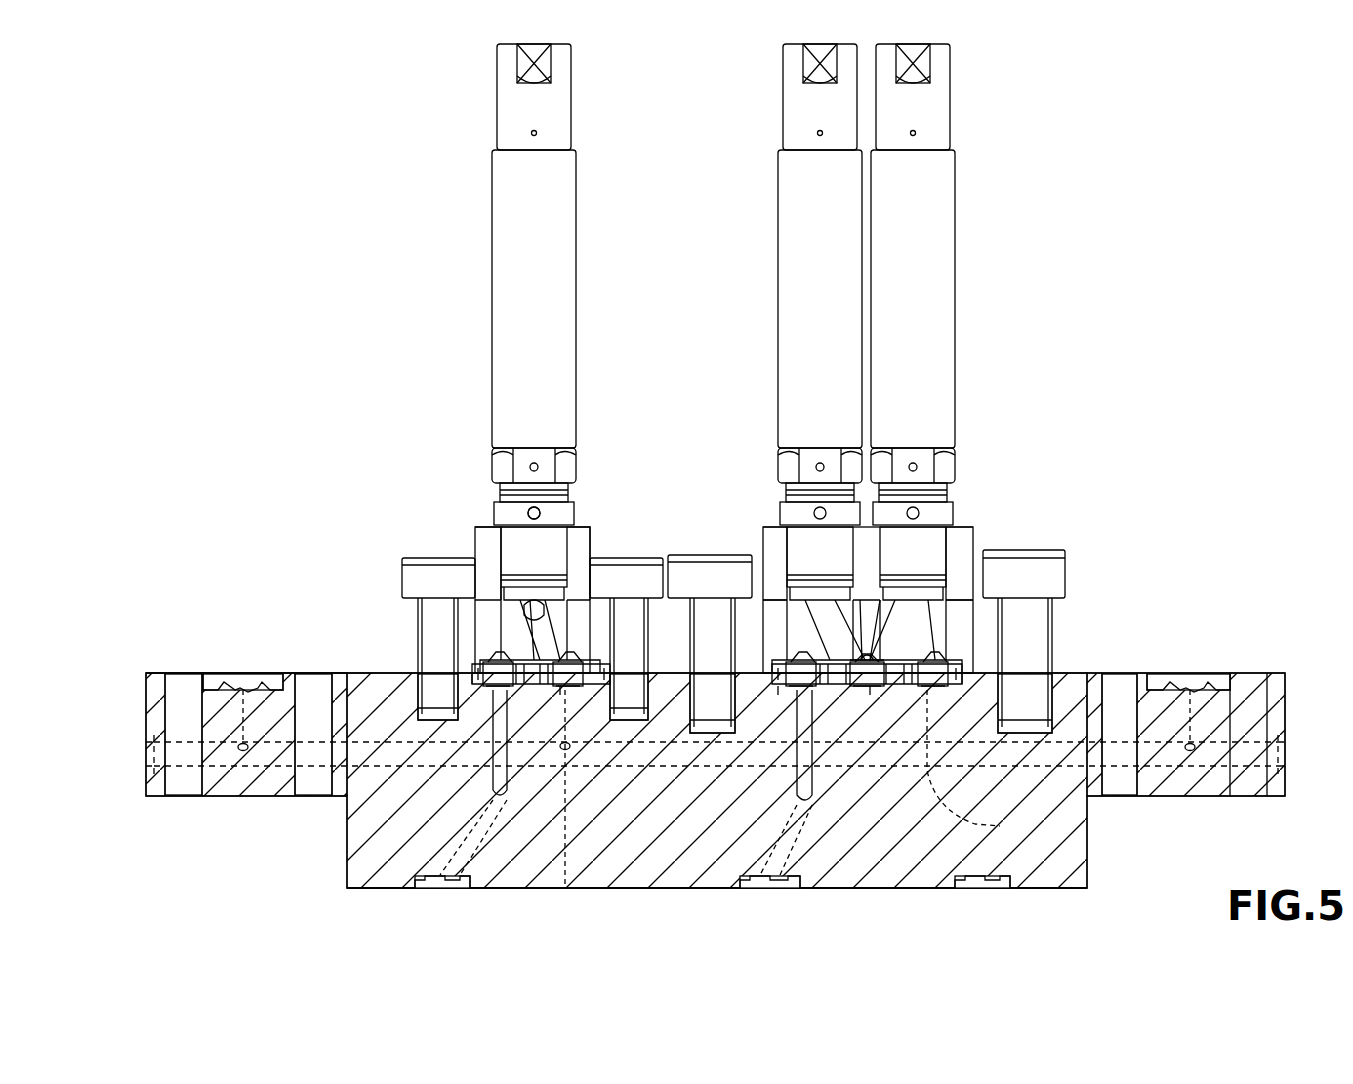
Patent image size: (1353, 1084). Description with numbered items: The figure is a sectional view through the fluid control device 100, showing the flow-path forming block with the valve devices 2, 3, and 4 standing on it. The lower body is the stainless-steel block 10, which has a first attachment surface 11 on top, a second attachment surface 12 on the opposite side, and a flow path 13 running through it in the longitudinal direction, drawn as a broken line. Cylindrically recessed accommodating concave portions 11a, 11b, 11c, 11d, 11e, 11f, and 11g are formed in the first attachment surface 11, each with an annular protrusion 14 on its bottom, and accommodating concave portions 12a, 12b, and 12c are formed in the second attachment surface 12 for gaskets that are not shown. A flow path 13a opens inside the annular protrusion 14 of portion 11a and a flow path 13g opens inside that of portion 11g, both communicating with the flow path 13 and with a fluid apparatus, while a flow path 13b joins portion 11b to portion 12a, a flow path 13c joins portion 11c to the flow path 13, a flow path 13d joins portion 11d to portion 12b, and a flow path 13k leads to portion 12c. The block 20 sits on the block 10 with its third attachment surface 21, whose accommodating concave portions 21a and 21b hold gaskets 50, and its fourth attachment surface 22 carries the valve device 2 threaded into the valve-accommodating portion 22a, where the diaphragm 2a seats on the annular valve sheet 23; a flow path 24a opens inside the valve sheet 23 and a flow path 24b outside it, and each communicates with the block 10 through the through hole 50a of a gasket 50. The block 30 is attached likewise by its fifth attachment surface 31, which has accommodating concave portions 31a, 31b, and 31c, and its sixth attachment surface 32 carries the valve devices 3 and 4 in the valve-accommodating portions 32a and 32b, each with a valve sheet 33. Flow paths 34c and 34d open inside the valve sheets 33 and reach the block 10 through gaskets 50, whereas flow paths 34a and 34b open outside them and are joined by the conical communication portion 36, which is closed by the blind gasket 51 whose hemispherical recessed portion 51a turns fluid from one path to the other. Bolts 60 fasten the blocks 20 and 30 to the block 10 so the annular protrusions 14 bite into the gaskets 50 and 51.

The fluid control device 100 is at (1256, 263).
The valve device 2 is at (527, 318).
The valve device 3 is at (800, 318).
The valve device 4 is at (930, 318).
The diaphragm 2a is at (533, 508).
The block 10 is at (378, 845).
The first attachment surface 11 is at (310, 673).
The accommodating concave portion 11a is at (275, 673).
The accommodating concave portion 11b is at (470, 674).
The accommodating concave portion 11c is at (560, 690).
The accommodating concave portion 11d is at (778, 690).
The accommodating concave portion 11e is at (872, 690).
The accommodating concave portion 11f is at (966, 676).
The accommodating concave portion 11g is at (1212, 673).
The second attachment surface 12 is at (686, 888).
The accommodating concave portion 12a is at (432, 888).
The accommodating concave portion 12b is at (758, 888).
The accommodating concave portion 12c is at (1005, 888).
The flow path 13 is at (1157, 770).
The flow path 13a is at (245, 673).
The flow path 13b is at (500, 800).
The flow path 13c is at (565, 888).
The flow path 13d is at (806, 805).
The flow path 13g is at (1190, 673).
The flow path 13k is at (1000, 826).
The annular protrusion 14 is at (232, 673).
The block 20 is at (488, 560).
The third attachment surface 21 is at (450, 700).
The accommodating concave portion 21a is at (520, 690).
The accommodating concave portion 21b is at (592, 685).
The fourth attachment surface 22 is at (566, 560).
The valve-accommodating portion 22a is at (513, 545).
The valve sheet 23 is at (556, 548).
The flow path 24a is at (490, 570).
The flow path 24b is at (576, 585).
The block 30 is at (962, 580).
The fifth attachment surface 31 is at (792, 690).
The accommodating concave portion 31a is at (855, 690).
The accommodating concave portion 31b is at (906, 690).
The accommodating concave portion 31c is at (950, 662).
The sixth attachment surface 32 is at (860, 560).
The valve-accommodating portion 32a is at (862, 630).
The valve-accommodating portion 32b is at (932, 600).
The valve sheet 33 is at (830, 560).
The flow path 34a is at (845, 560).
The flow path 34b is at (926, 560).
The flow path 34c is at (836, 640).
The flow path 34d is at (950, 650).
The communication portion 36 is at (856, 650).
The gasket 50 is at (475, 668).
The through hole 50a is at (472, 645).
The gasket 51 is at (886, 690).
The recessed portion 51a is at (932, 640).
The bolt 60 is at (440, 575).